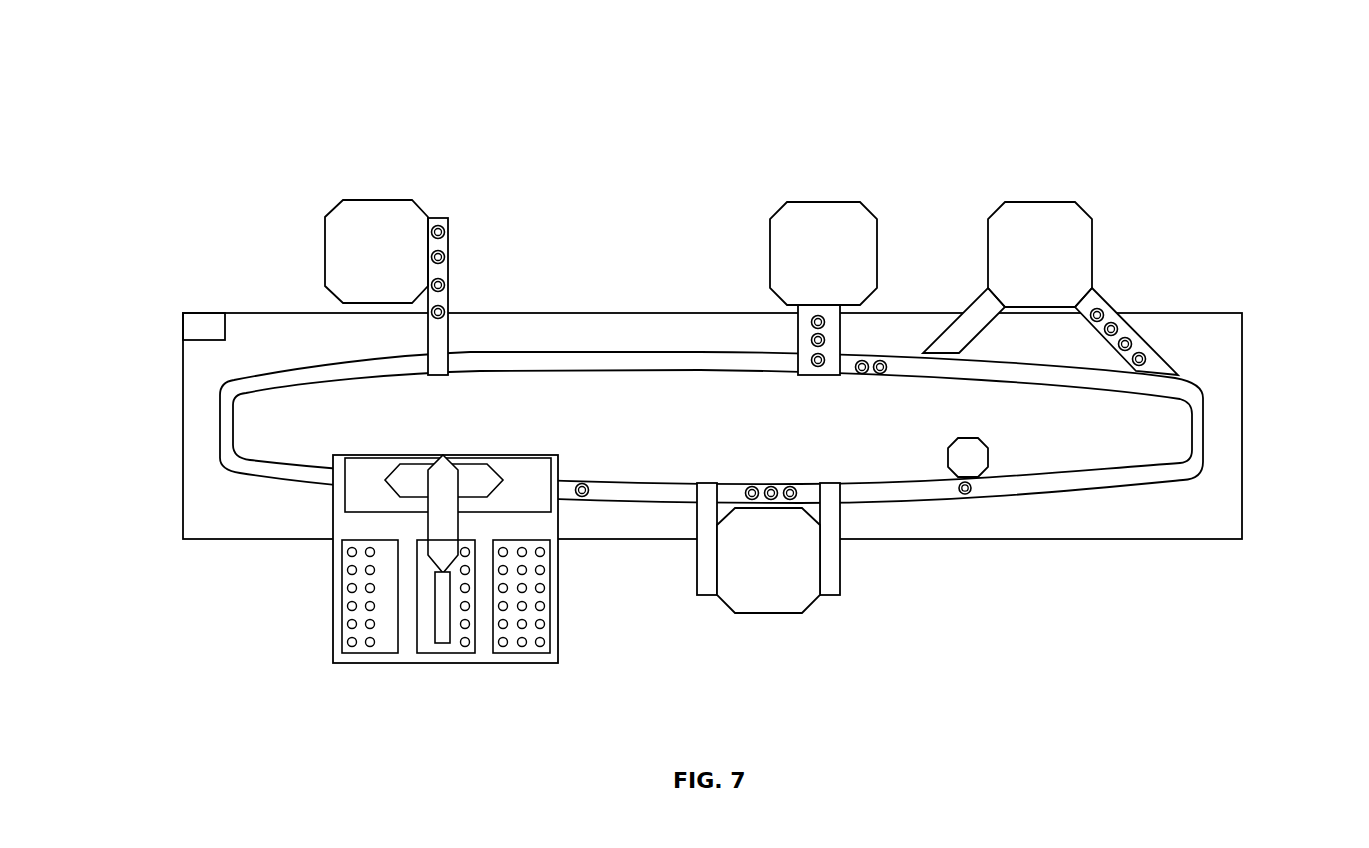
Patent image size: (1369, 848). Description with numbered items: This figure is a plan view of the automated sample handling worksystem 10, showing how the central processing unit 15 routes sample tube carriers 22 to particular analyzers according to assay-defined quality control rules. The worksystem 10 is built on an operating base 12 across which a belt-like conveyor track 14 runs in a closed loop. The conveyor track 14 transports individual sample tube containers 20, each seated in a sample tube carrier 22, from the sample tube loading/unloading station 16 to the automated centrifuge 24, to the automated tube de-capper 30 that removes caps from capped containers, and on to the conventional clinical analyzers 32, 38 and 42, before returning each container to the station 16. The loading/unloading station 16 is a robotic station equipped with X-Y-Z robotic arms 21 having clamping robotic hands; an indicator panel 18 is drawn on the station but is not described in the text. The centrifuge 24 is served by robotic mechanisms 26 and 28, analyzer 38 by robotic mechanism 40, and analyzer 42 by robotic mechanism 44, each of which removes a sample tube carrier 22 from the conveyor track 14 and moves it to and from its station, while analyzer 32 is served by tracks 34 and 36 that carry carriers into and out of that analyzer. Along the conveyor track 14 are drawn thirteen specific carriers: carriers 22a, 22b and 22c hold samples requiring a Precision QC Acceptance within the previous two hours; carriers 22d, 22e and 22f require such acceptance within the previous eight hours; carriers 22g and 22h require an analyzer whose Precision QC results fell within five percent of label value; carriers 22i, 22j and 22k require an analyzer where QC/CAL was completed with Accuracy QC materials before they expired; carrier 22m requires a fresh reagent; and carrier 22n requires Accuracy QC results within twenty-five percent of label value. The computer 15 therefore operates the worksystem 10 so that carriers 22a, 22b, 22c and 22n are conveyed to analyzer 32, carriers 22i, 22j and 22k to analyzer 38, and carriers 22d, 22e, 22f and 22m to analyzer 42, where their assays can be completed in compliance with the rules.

The sample handling worksystem 10 is at (226, 158).
The operating base 12 is at (180, 342).
The conveyor track 14 is at (223, 448).
The computer 15 is at (202, 320).
The sample tube loading/unloading station 16 is at (322, 672).
The indicator panel 18 is at (550, 622).
The sample tube container 20 is at (520, 643).
The X-Y-Z robotic arm 21 is at (410, 506).
The sample tube carrier 22 is at (582, 483).
The sample tube carrier 22a is at (1110, 317).
The sample tube carrier 22b is at (1120, 328).
The sample tube carrier 22c is at (1132, 344).
The sample tube carrier 22d is at (438, 225).
The sample tube carrier 22e is at (445, 257).
The sample tube carrier 22f is at (445, 285).
The sample tube carrier 22g is at (864, 374).
The sample tube carrier 22h is at (886, 368).
The sample tube carrier 22i is at (827, 318).
The sample tube carrier 22j is at (807, 338).
The sample tube carrier 22k is at (817, 367).
The sample tube carrier 22m is at (445, 312).
The sample tube carrier 22n is at (1146, 362).
The automated centrifuge 24 is at (752, 573).
The robotic mechanism 26 is at (705, 535).
The robotic mechanism 28 is at (832, 528).
The automated tube de-capper 30 is at (973, 458).
The clinical analyzer 32 is at (1023, 263).
The track 34 is at (1097, 333).
The track 36 is at (973, 317).
The clinical analyzer 38 is at (807, 263).
The robotic mechanism 40 is at (800, 348).
The clinical analyzer 42 is at (362, 263).
The robotic mechanism 44 is at (428, 325).